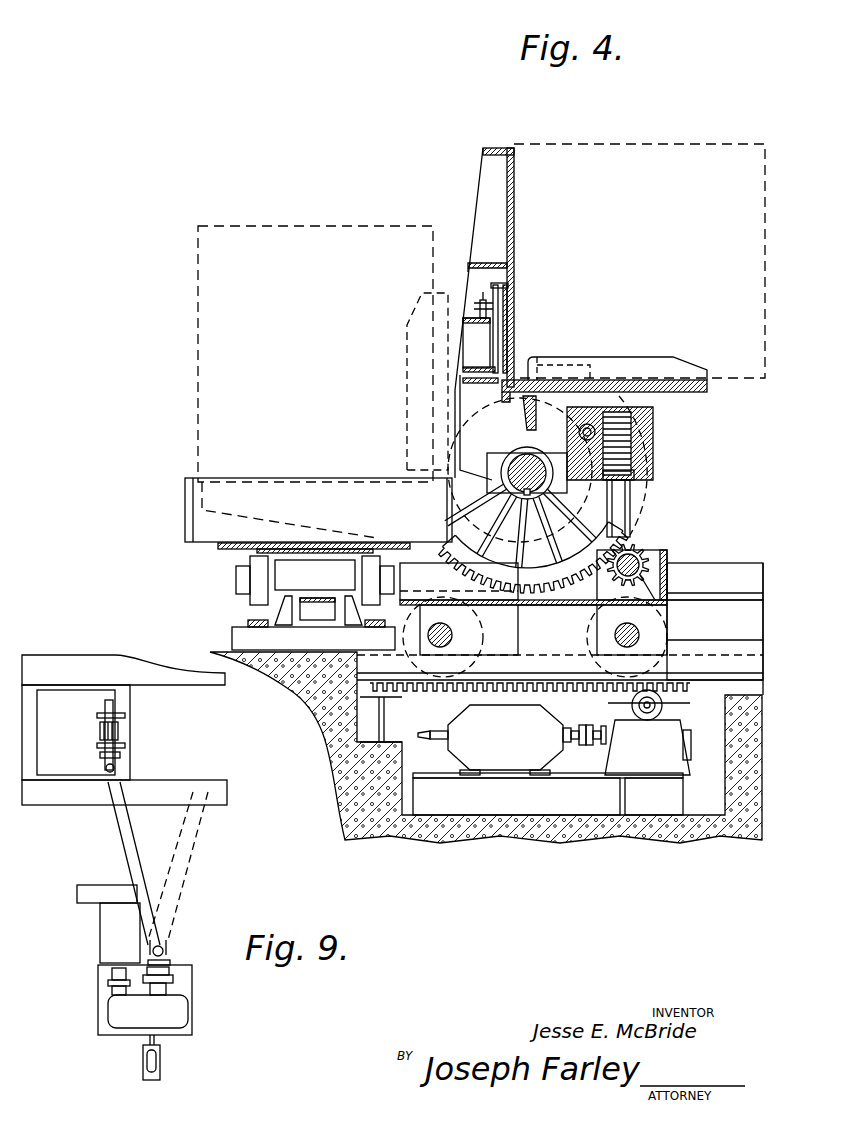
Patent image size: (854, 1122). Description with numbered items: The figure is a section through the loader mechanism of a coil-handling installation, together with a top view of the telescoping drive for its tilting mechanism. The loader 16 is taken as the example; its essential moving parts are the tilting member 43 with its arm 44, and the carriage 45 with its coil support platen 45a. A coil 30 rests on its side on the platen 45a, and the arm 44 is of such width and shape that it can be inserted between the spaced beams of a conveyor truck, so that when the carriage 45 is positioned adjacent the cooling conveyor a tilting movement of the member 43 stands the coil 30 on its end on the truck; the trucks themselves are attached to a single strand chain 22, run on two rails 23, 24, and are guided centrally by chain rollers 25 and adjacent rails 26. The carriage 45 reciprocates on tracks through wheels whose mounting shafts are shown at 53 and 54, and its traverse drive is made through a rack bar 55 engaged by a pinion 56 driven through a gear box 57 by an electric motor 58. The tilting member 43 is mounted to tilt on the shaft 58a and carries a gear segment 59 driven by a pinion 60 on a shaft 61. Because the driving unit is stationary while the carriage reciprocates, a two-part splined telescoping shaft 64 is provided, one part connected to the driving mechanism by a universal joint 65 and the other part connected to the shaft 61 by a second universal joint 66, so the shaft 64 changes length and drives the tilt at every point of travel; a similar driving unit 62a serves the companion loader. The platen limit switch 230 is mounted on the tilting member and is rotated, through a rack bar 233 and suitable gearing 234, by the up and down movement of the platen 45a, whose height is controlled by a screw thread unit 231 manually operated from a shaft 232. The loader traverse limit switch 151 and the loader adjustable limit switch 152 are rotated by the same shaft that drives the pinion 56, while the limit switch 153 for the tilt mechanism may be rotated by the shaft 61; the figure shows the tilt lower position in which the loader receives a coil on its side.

In FIG. 4, the loader 16 is at (662, 489).
In FIG. 4, the single strand chain 22 is at (303, 610).
In FIG. 4, the rail 23 is at (375, 621).
In FIG. 4, the rail 24 is at (250, 623).
In FIG. 4, the chain roller 25 is at (300, 606).
In FIG. 4, the adjacent rail 26 is at (287, 596).
In FIG. 4, the coil 30 is at (673, 150).
In FIG. 4, the tilting member 43 is at (470, 408).
In FIG. 4, the arm 44 is at (514, 228).
In FIG. 4, the carriage 45 is at (648, 629).
In FIG. 9, the carriage 45 is at (118, 699).
In FIG. 4, the coil support platen 45a is at (628, 358).
In FIG. 4, the wheel shaft 53 is at (640, 641).
In FIG. 4, the wheel shaft 54 is at (452, 635).
In FIG. 4, the rack bar 55 is at (442, 692).
In FIG. 4, the pinion 56 is at (663, 701).
In FIG. 4, the gear box 57 is at (691, 719).
In FIG. 4, the electric motor 58 is at (540, 719).
In FIG. 4, the shaft 58a is at (522, 486).
In FIG. 4, the gear segment 59 is at (543, 494).
In FIG. 4, the pinion 60 is at (632, 556).
In FIG. 9, the pinion 60 is at (122, 731).
In FIG. 4, the shaft 61 is at (648, 560).
In FIG. 9, the shaft 61 is at (122, 757).
In FIG. 9, the driving unit 62a is at (100, 928).
In FIG. 9, the telescoping shaft 64 is at (138, 843).
In FIG. 9, the universal joint 65 is at (168, 952).
In FIG. 9, the second universal joint 66 is at (116, 769).
In FIG. 4, the loader traverse limit switch 151 is at (587, 723).
In FIG. 4, the loader adjustable limit switch 152 is at (569, 786).
In FIG. 9, the limit switch 153 is at (163, 1061).
In FIG. 4, the platen limit switch 230 is at (472, 338).
In FIG. 4, the screw thread unit 231 is at (657, 457).
In FIG. 4, the shaft 232 is at (655, 437).
In FIG. 4, the rack bar 233 is at (508, 340).
In FIG. 4, the gearing 234 is at (483, 300).